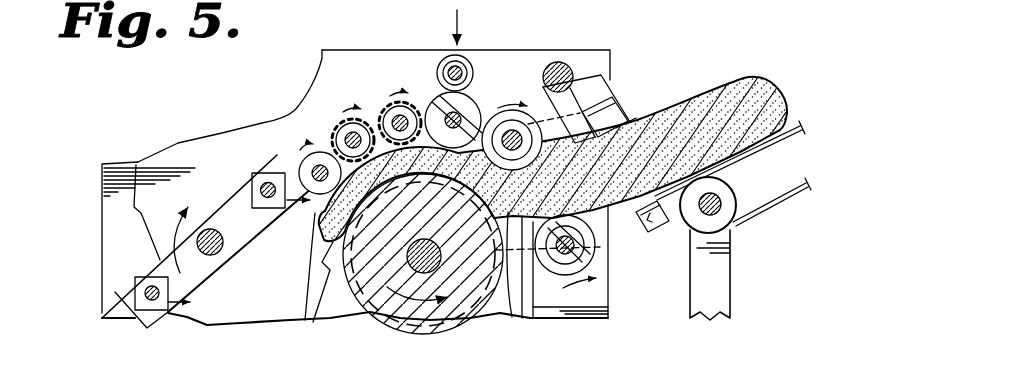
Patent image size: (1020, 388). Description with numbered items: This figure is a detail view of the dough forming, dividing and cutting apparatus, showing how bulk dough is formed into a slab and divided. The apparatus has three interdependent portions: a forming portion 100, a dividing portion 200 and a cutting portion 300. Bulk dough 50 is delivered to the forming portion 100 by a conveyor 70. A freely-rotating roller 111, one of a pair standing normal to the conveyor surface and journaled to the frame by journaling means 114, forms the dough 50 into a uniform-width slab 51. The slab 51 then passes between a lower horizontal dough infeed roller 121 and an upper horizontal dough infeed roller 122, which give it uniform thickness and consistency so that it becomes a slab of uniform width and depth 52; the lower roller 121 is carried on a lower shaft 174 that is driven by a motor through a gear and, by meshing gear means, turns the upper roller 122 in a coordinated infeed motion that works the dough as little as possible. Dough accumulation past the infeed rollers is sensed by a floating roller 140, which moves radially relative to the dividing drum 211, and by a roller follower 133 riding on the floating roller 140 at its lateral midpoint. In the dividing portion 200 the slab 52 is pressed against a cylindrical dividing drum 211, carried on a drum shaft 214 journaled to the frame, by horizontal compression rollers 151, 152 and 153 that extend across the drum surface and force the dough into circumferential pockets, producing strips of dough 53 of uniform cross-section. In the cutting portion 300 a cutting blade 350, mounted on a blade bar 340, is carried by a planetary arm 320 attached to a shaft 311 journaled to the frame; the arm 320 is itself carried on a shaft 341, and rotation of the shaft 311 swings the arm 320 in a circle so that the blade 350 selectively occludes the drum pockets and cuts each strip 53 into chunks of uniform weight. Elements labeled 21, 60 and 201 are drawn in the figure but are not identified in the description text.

The machine frame 21 is at (113, 247).
The dough 50 is at (747, 106).
The uniform-width slab 51 is at (626, 120).
The slab of uniform width and depth 52 is at (508, 205).
The strips of dough 53 is at (327, 262).
The rod assembly 60 is at (733, 178).
The conveyor 70 is at (760, 222).
The forming portion 100 is at (639, 154).
The freely-rotating roller 111 is at (653, 218).
The journaling means 114 is at (597, 83).
The lower horizontal dough infeed roller 121 is at (552, 262).
The upper horizontal dough infeed roller 122 is at (545, 112).
The roller follower 133 is at (443, 62).
The floating roller 140 is at (467, 100).
The compression roller 151 is at (413, 107).
The compression roller 152 is at (335, 122).
The compression roller 153 is at (292, 155).
The lower shaft 174 is at (600, 262).
The dividing portion 200 is at (321, 97).
The material band 201 is at (600, 180).
The dividing drum 211 is at (475, 283).
The drum shaft 214 is at (420, 264).
The cutting portion 300 is at (187, 215).
The shaft 311 is at (213, 250).
The planetary arm 320 is at (134, 205).
The blade bar 340 is at (252, 187).
The shaft 341 is at (150, 312).
The cutting blade 350 is at (200, 318).